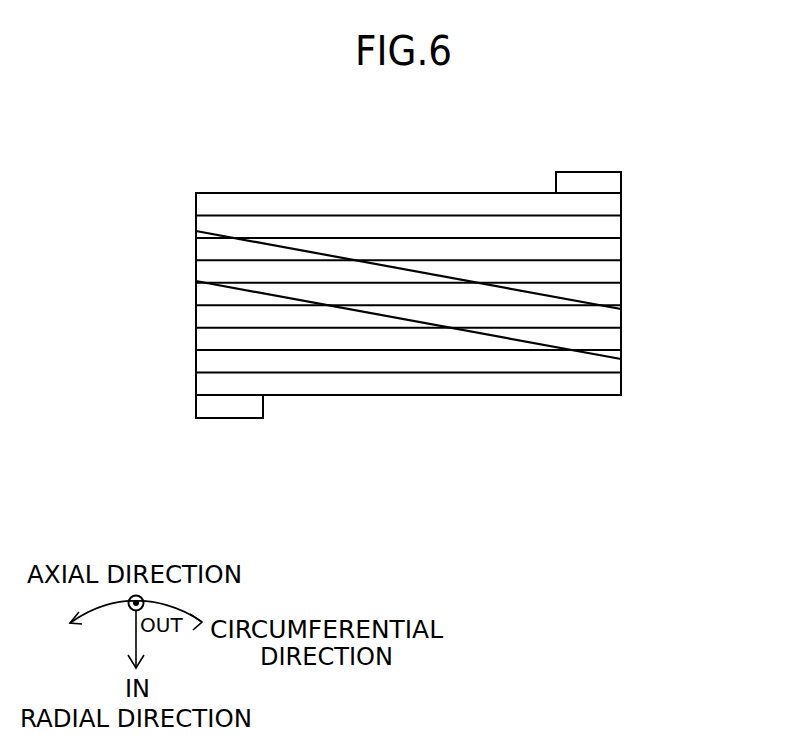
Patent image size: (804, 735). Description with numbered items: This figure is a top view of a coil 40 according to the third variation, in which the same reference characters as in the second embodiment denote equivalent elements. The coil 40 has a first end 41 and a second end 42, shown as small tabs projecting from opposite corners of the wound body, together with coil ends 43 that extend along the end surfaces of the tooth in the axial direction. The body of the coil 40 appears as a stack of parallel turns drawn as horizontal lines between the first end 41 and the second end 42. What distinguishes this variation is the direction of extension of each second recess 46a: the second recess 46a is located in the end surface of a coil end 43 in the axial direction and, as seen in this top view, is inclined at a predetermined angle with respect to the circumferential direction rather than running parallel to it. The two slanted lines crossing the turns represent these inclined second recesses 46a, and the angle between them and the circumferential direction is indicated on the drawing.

The coil 40 is at (214, 130).
The first end 41 is at (233, 405).
The second end 42 is at (585, 183).
The coil end 43 is at (359, 186).
The second recess 46a is at (266, 244).